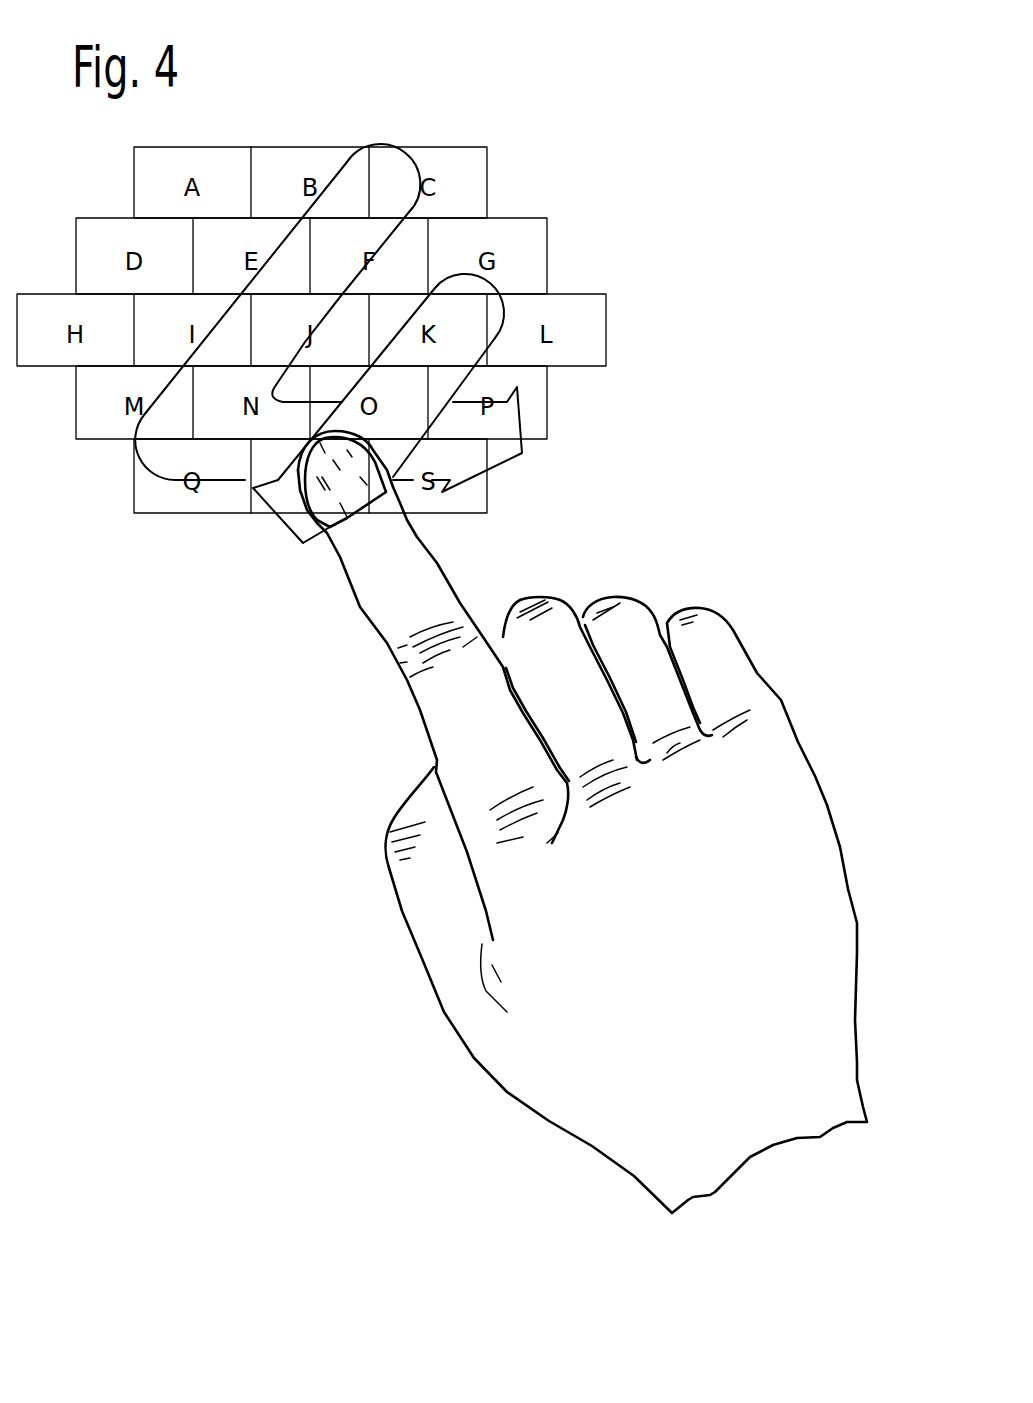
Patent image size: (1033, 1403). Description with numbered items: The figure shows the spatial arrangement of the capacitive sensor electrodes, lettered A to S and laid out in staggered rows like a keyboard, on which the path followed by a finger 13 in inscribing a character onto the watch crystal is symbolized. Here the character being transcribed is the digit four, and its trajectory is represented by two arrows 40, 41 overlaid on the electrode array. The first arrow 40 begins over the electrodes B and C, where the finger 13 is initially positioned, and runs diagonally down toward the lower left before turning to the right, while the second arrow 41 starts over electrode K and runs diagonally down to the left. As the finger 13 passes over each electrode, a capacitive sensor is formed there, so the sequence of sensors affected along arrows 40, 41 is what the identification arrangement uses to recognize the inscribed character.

The finger 13 is at (366, 563).
The arrow 40 is at (380, 177).
The arrow 41 is at (468, 311).